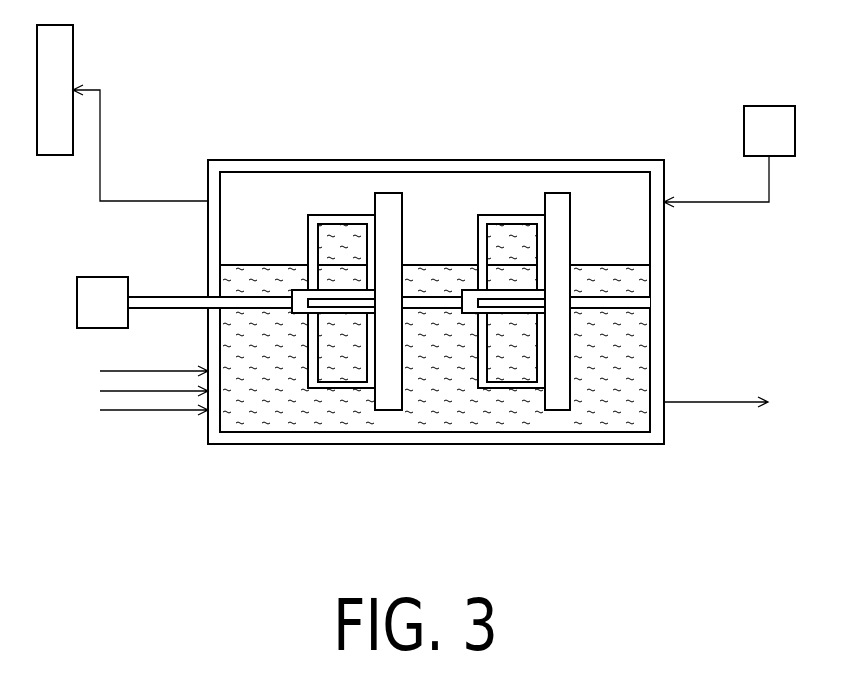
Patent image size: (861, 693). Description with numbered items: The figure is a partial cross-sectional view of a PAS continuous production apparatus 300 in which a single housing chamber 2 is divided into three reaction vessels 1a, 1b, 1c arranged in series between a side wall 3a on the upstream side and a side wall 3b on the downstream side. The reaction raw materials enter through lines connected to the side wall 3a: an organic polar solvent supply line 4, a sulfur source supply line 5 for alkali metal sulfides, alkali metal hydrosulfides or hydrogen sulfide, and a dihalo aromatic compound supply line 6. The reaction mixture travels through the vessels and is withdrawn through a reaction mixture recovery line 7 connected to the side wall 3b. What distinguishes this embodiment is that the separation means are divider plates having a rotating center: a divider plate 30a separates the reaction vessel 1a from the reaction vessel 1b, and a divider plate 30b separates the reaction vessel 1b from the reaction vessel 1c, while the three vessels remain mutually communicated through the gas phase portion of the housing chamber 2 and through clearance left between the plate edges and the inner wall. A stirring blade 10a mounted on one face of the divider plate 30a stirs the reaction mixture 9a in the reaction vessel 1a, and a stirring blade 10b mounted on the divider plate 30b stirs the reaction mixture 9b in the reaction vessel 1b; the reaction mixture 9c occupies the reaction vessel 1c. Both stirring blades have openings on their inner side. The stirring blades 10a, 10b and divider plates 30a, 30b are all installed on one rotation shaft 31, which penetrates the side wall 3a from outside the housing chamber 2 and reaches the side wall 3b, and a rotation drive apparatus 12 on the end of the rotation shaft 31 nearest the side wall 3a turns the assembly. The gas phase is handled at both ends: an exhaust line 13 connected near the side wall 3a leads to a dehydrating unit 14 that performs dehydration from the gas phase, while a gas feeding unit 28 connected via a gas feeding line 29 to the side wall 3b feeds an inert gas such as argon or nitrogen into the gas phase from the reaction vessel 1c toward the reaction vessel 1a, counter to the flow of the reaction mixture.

The PAS continuous production apparatus 300 is at (611, 62).
The housing chamber 2 is at (663, 135).
The reaction vessel 1a is at (280, 195).
The reaction vessel 1b is at (449, 195).
The reaction vessel 1c is at (609, 195).
The stirring blade 10a is at (343, 220).
The stirring blade 10b is at (512, 220).
The divider plate 30a is at (386, 205).
The divider plate 30b is at (556, 205).
The rotation shaft 31 is at (167, 297).
The rotation drive apparatus 12 is at (104, 277).
The exhaust line 13 is at (153, 201).
The dehydrating unit 14 is at (75, 50).
The gas feeding unit 28 is at (770, 106).
The gas feeding line 29 is at (716, 202).
The organic polar solvent supply line 4 is at (118, 366).
The sulfur source supply line 5 is at (118, 386).
The dihalo aromatic compound supply line 6 is at (118, 406).
The reaction mixture recovery line 7 is at (717, 400).
The side wall 3a is at (207, 418).
The side wall 3b is at (665, 417).
The reaction mixture 9a is at (273, 413).
The reaction mixture 9b is at (424, 412).
The reaction mixture 9c is at (600, 413).